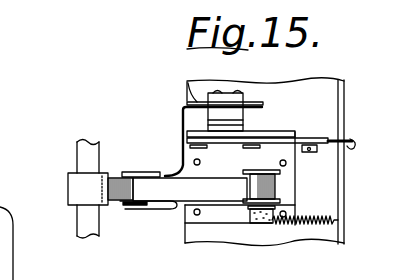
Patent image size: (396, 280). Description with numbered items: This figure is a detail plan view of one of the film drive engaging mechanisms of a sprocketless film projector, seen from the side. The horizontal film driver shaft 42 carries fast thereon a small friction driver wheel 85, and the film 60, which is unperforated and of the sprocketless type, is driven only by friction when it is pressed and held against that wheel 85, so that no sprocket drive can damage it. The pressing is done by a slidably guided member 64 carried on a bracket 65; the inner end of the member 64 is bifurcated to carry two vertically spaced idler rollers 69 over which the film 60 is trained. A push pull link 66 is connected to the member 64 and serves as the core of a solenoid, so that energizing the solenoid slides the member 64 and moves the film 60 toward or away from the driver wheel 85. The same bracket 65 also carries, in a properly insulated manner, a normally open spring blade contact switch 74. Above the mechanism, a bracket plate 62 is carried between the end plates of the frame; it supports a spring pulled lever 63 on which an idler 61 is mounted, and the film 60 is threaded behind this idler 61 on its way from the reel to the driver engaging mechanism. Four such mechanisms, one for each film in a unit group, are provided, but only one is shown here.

The film driver shaft 42 is at (87, 147).
The film 60 is at (163, 187).
The idler 61 is at (258, 176).
The bracket plate 62 is at (213, 232).
The spring pulled lever 63 is at (251, 225).
The slidably guided member 64 is at (181, 140).
The bracket 65 is at (273, 134).
The push pull link 66 is at (347, 135).
The idler roller 69 is at (128, 204).
The spring blade contact switch 74 is at (188, 84).
The friction driver wheel 85 is at (70, 179).